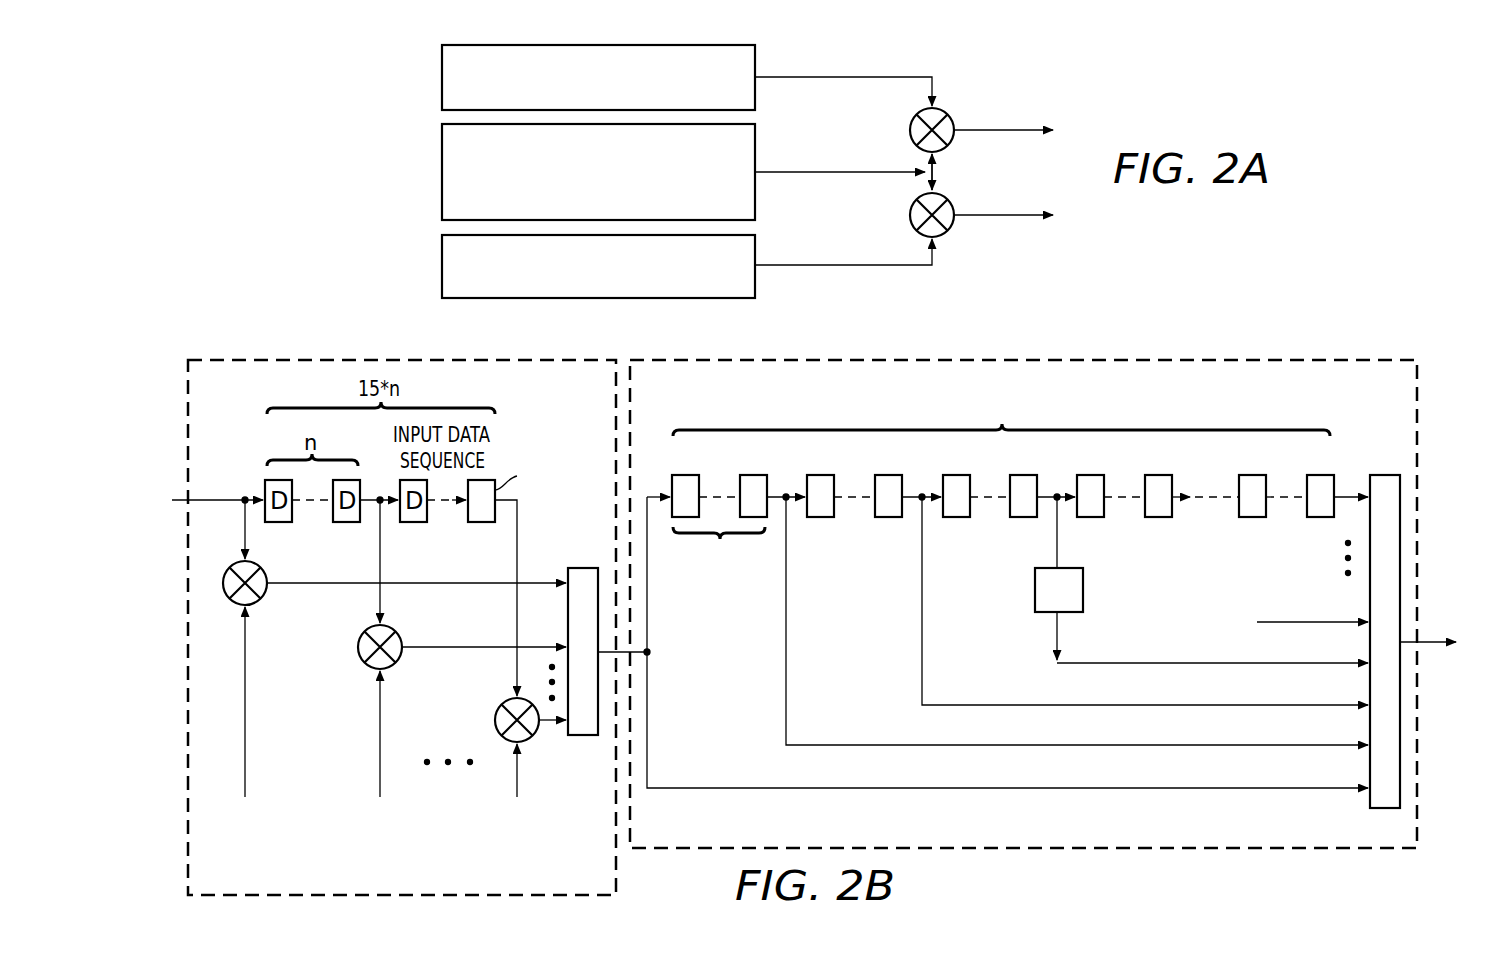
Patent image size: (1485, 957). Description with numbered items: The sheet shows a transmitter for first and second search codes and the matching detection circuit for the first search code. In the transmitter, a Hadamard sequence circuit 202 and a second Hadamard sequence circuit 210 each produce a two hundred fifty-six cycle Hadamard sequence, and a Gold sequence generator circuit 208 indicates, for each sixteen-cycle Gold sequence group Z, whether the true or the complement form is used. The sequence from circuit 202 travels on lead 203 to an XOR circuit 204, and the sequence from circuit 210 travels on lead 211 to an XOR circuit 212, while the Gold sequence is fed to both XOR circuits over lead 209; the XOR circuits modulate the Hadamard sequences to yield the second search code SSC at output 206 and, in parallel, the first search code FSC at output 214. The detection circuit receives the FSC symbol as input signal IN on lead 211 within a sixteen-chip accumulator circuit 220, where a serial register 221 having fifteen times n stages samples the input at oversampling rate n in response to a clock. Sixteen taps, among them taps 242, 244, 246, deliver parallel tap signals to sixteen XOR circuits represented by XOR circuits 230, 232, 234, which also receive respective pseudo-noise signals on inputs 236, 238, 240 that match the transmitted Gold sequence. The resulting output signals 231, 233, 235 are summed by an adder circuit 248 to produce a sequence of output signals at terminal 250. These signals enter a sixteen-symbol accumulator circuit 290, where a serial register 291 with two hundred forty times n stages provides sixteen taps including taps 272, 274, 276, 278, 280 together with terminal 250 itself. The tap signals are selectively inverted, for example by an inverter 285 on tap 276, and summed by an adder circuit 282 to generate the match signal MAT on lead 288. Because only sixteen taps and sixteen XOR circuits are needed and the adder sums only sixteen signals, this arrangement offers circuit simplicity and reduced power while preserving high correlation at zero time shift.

In FIG. 2A, the Hadamard sequence circuit 202 is at (442, 78).
In FIG. 2A, the lead 203 is at (828, 78).
In FIG. 2A, the XOR circuit 204 is at (948, 115).
In FIG. 2A, the SSC output 206 is at (1026, 129).
In FIG. 2A, the Gold sequence generator circuit 208 is at (442, 168).
In FIG. 2A, the PN sequence signal line 209 is at (780, 171).
In FIG. 2A, the Hadamard sequence circuit 210 is at (442, 268).
In FIG. 2A, the lead 211 is at (810, 265).
In FIG. 2B, the lead 211 is at (212, 500).
In FIG. 2A, the XOR circuit 212 is at (948, 200).
In FIG. 2A, the FSC output 214 is at (1027, 216).
In FIG. 2B, the 16-chip accumulator circuit 220 is at (255, 360).
In FIG. 2B, the serial register 221 is at (525, 434).
In FIG. 2B, the XOR circuit 230 is at (259, 603).
In FIG. 2B, the output signal 231 is at (451, 582).
In FIG. 2B, the XOR circuit 232 is at (358, 649).
In FIG. 2B, the output signal 233 is at (454, 646).
In FIG. 2B, the XOR circuit 234 is at (495, 719).
In FIG. 2B, the output signal 235 is at (545, 733).
In FIG. 2B, the PN sequence register input 236 is at (247, 700).
In FIG. 2B, the PN sequence register input 238 is at (380, 734).
In FIG. 2B, the PN sequence register input 240 is at (517, 781).
In FIG. 2B, the tap 242 is at (247, 537).
In FIG. 2B, the tap 244 is at (379, 601).
In FIG. 2B, the tap 246 is at (517, 666).
In FIG. 2B, the adder circuit 248 is at (580, 568).
In FIG. 2B, the terminal 250 is at (652, 690).
In FIG. 2B, the tap 272 is at (786, 632).
In FIG. 2B, the tap 274 is at (922, 632).
In FIG. 2B, the tap 276 is at (1057, 631).
In FIG. 2B, the tap 278 is at (1287, 622).
In FIG. 2B, the tap 280 is at (1349, 492).
In FIG. 2B, the adder circuit 282 is at (1370, 805).
In FIG. 2B, the inverter 285 is at (1033, 591).
In FIG. 2B, the lead 288 is at (1435, 648).
In FIG. 2B, the 16-symbol accumulator circuit 290 is at (1318, 850).
In FIG. 2B, the serial register 291 is at (1360, 422).